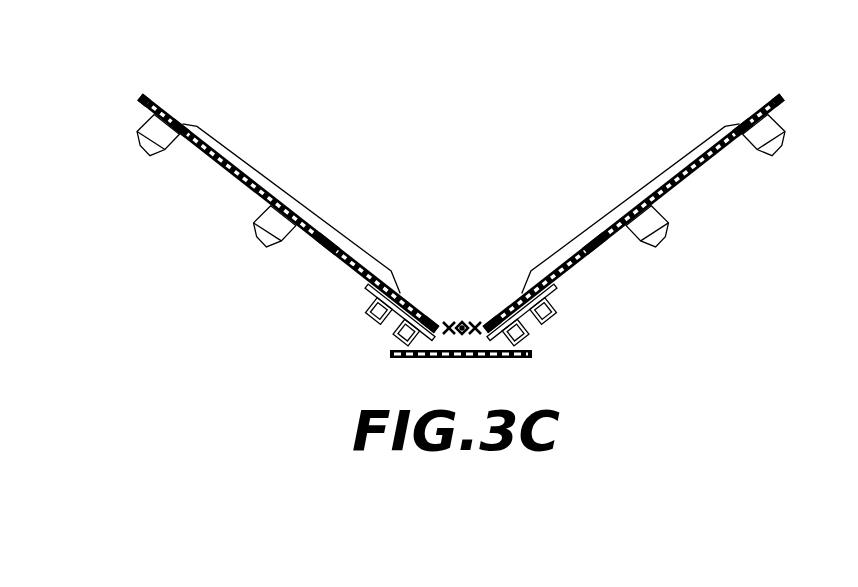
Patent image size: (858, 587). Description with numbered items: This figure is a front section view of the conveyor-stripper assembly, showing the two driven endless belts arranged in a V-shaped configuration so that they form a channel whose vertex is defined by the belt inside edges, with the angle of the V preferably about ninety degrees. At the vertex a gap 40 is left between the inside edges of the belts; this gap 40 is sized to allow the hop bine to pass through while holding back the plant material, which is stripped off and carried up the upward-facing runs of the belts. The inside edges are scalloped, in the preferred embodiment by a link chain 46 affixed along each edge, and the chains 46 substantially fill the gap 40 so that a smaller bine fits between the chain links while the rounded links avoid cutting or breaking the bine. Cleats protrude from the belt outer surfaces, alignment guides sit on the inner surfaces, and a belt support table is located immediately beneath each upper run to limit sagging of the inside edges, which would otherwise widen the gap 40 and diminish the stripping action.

The gap 40 is at (461, 310).
The link chain 46 is at (460, 338).